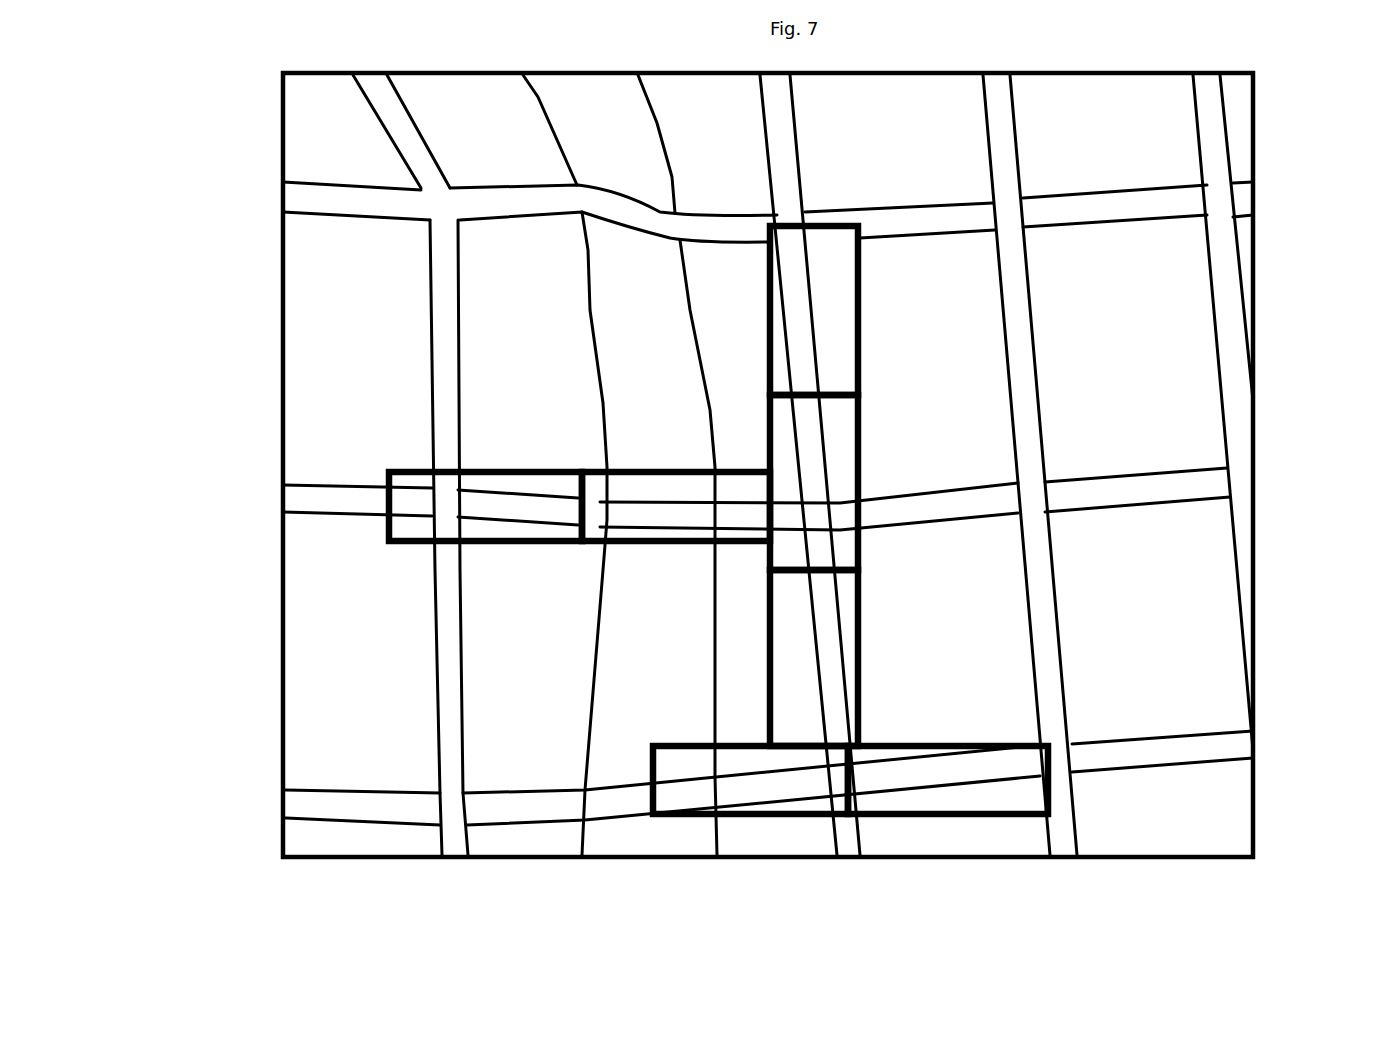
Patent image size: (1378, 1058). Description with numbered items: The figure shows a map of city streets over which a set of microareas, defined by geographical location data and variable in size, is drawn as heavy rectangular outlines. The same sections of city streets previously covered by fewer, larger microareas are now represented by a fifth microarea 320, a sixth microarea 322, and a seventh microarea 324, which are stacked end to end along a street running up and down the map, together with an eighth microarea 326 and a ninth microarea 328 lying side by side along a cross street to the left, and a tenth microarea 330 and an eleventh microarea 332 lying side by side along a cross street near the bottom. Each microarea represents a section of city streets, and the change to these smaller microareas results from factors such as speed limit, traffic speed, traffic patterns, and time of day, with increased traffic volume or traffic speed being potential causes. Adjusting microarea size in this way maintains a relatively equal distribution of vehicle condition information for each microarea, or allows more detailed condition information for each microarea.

The fifth microarea 320 is at (863, 342).
The sixth microarea 322 is at (863, 483).
The seventh microarea 324 is at (863, 637).
The eighth microarea 326 is at (427, 470).
The ninth microarea 328 is at (607, 543).
The tenth microarea 330 is at (700, 820).
The eleventh microarea 332 is at (1020, 815).